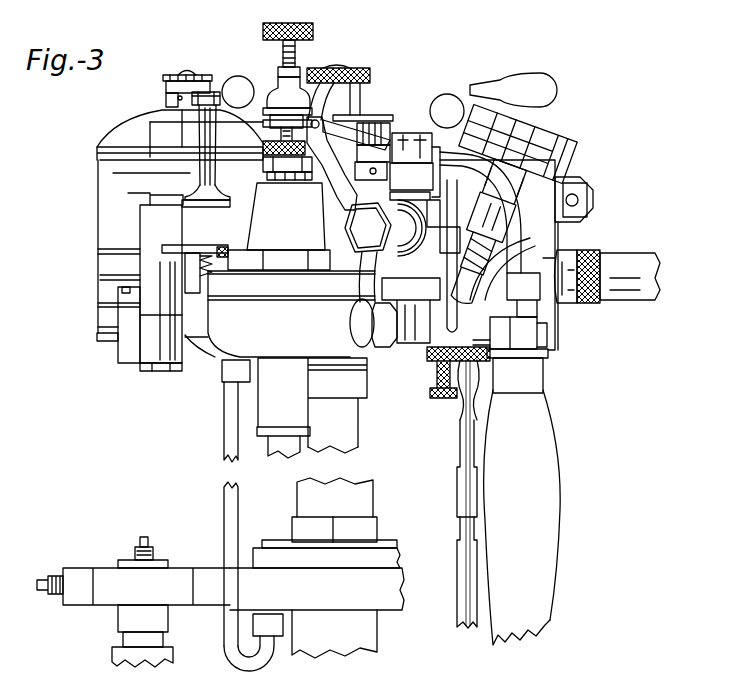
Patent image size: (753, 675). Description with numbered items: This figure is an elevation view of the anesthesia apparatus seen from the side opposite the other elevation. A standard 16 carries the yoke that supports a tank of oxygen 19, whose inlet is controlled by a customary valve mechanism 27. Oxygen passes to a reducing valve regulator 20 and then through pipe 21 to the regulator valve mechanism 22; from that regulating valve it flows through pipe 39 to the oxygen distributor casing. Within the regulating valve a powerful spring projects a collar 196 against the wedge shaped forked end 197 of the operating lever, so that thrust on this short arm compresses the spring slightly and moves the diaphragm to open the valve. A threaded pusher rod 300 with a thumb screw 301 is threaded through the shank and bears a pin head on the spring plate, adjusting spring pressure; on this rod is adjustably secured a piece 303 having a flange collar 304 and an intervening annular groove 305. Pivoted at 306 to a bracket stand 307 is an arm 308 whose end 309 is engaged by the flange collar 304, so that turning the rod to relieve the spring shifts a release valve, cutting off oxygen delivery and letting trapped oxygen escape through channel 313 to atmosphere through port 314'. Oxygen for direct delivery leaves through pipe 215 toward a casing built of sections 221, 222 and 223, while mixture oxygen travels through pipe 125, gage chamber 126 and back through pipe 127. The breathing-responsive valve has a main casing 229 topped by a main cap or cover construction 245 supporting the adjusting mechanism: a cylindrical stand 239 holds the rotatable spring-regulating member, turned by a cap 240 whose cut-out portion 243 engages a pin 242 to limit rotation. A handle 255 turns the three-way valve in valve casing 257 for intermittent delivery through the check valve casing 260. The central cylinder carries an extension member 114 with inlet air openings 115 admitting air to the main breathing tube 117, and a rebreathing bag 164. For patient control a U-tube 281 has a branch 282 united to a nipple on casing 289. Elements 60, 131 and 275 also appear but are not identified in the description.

The standard 16 is at (358, 430).
The tank of oxygen 19 is at (112, 656).
The reducing valve regulator 20 is at (390, 562).
The pipe 21 is at (226, 490).
The regulator valve mechanism 22 is at (226, 335).
The valve mechanism 27 is at (135, 548).
The pipe 39 is at (350, 288).
The bulb 60 is at (558, 91).
The extension member 114 is at (582, 183).
The inlet air openings 115 is at (588, 200).
The main breathing tube 117 is at (643, 262).
The pipe 125 is at (500, 250).
The gage chamber 126 is at (568, 163).
The pipe 127 is at (540, 244).
The cap 131 is at (352, 88).
The rebreathing bag 164 is at (548, 438).
The collar 196 is at (263, 169).
The wedge shaped forked end 197 is at (290, 160).
The pipe 215 is at (196, 355).
The casing section 221 is at (102, 265).
The middle casing section 222 is at (104, 290).
The casing section 223 is at (104, 317).
The main casing 229 is at (108, 213).
The cylindrical stand 239 is at (178, 107).
The cap 240 is at (181, 75).
The pin 242 is at (178, 98).
The cut-out portion 243 is at (166, 93).
The main cap or cover construction 245 is at (128, 138).
The handle 255 is at (237, 78).
The valve casing 257 is at (148, 230).
The check valve casing 260 is at (128, 350).
The pipe 275 is at (306, 669).
The U-tube 281 is at (460, 587).
The branch 282 is at (465, 442).
The casing 289 is at (545, 363).
The threaded pusher rod 300 is at (296, 57).
The thumb screw 301 is at (313, 31).
The piece 303 is at (307, 72).
The flange collar 304 is at (290, 150).
The annular groove 305 is at (290, 98).
The pivot 306 is at (323, 108).
The bracket stand 307 is at (323, 167).
The arm 308 is at (350, 133).
The end 309 is at (290, 117).
The channel 313 is at (457, 326).
The port 314' is at (394, 181).